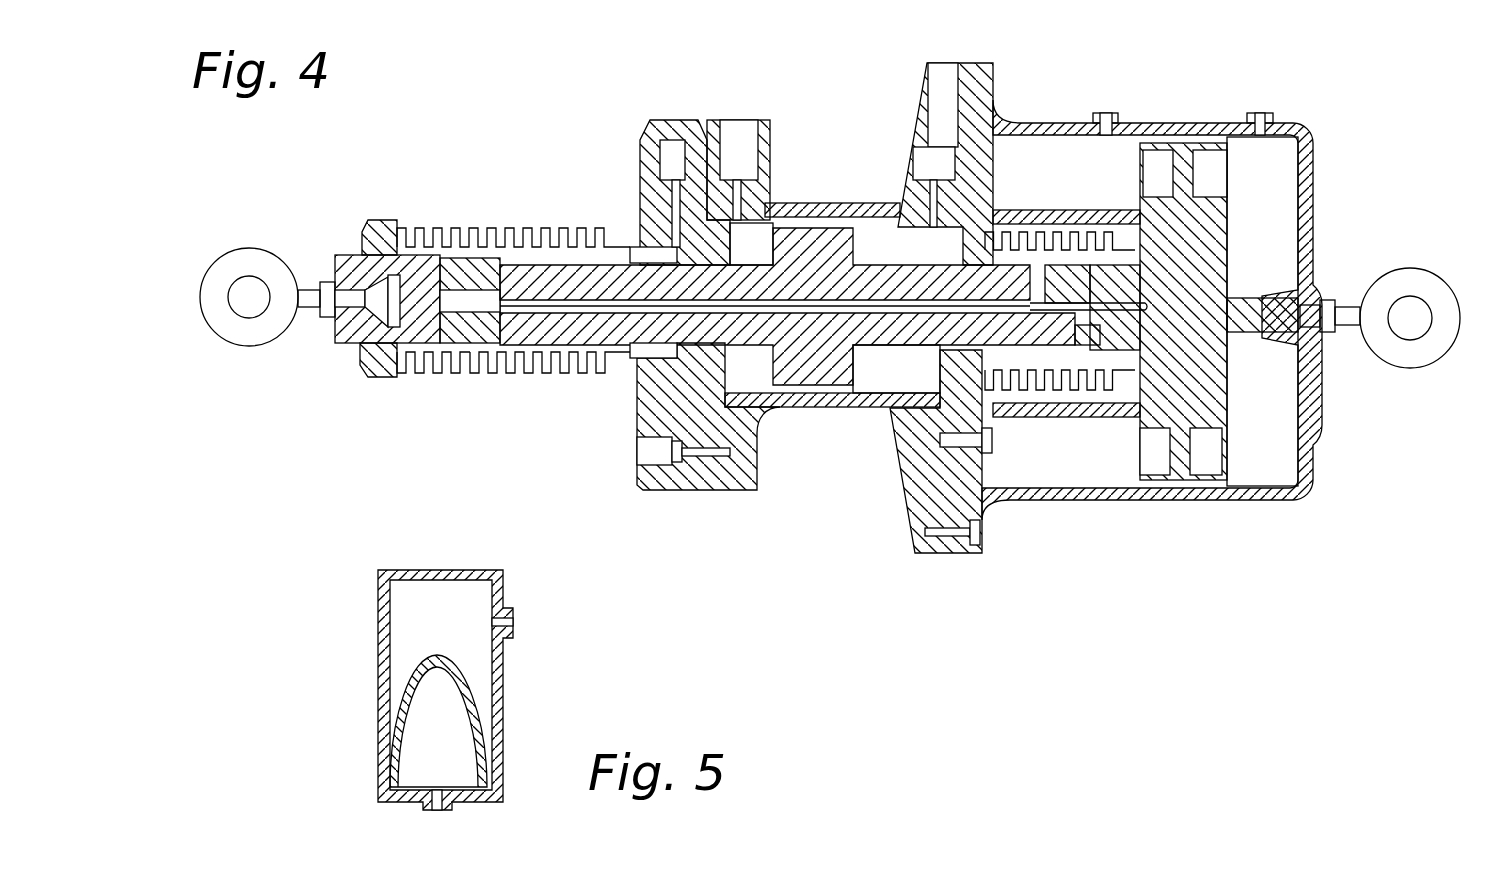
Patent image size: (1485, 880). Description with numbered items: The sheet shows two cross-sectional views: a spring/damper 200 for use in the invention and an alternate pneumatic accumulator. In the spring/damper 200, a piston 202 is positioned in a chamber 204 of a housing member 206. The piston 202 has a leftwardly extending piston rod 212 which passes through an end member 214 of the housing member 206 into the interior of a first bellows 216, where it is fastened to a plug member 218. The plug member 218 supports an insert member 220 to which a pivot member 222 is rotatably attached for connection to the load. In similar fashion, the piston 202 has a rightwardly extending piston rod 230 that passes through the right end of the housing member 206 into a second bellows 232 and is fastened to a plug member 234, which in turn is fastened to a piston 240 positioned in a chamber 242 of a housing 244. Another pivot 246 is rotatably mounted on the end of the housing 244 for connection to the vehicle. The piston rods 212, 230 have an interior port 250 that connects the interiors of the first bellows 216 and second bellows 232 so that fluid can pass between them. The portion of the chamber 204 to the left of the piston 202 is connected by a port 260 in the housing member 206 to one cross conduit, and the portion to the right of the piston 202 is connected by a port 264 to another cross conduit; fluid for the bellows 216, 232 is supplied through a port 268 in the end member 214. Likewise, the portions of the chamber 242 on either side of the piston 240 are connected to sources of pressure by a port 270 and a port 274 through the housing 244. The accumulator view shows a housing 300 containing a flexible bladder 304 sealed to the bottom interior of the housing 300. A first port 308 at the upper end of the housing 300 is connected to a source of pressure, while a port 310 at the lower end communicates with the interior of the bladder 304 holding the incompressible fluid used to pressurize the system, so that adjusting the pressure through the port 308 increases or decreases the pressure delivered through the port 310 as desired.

In FIG. 4, the spring/damper 200 is at (525, 183).
In FIG. 4, the piston 202 is at (784, 266).
In FIG. 4, the chamber 204 is at (879, 384).
In FIG. 4, the housing member 206 is at (820, 204).
In FIG. 4, the piston rod 212 is at (515, 352).
In FIG. 4, the end member 214 is at (643, 472).
In FIG. 4, the first bellows 216 is at (422, 374).
In FIG. 4, the plug member 218 is at (357, 358).
In FIG. 4, the insert member 220 is at (333, 268).
In FIG. 4, the pivot member 222 is at (208, 263).
In FIG. 4, the piston rod 230 is at (855, 408).
In FIG. 4, the second bellows 232 is at (1070, 418).
In FIG. 4, the plug member 234 is at (1227, 355).
In FIG. 4, the piston 240 is at (1227, 232).
In FIG. 4, the chamber 242 is at (1231, 444).
In FIG. 4, the housing 244 is at (1220, 503).
In FIG. 4, the pivot 246 is at (1412, 268).
In FIG. 4, the interior port 250 is at (878, 292).
In FIG. 4, the port 260 is at (741, 150).
In FIG. 4, the port 264 is at (926, 150).
In FIG. 4, the port 268 is at (675, 152).
In FIG. 4, the port 270 is at (1106, 112).
In FIG. 4, the port 274 is at (1262, 113).
In FIG. 5, the housing 300 is at (504, 705).
In FIG. 5, the flexible bladder 304 is at (422, 660).
In FIG. 5, the first port 308 is at (514, 626).
In FIG. 5, the port 310 is at (437, 812).